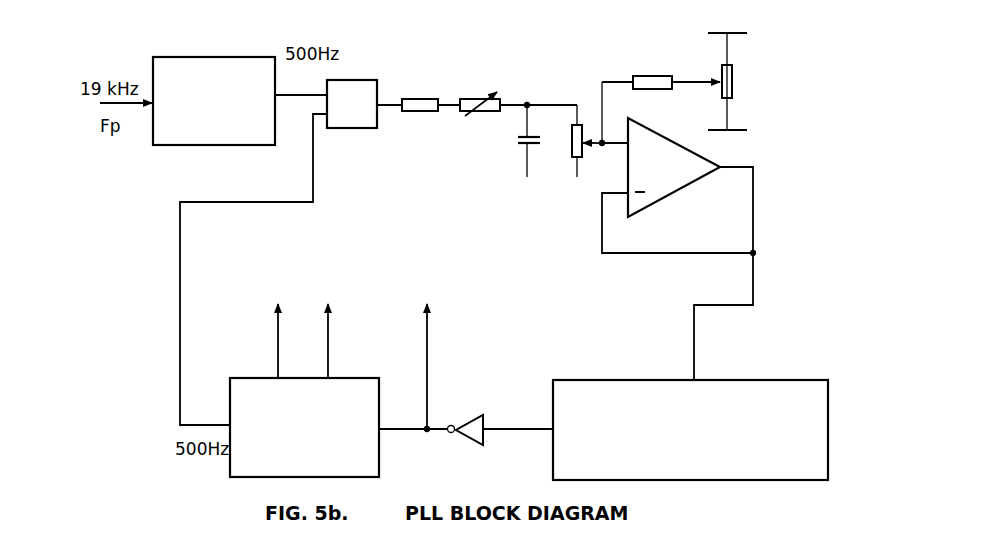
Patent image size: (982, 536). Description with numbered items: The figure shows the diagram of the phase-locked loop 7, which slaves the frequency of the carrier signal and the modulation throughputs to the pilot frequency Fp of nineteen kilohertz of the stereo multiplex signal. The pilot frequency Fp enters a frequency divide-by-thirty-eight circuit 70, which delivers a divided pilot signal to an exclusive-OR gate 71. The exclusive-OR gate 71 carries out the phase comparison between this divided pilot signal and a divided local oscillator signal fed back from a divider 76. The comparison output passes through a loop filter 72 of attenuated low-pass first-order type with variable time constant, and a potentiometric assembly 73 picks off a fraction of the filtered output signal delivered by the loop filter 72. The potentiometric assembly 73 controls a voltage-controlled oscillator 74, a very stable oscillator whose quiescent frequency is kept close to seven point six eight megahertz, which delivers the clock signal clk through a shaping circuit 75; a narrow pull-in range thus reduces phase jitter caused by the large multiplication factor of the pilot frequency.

The phase-locked loop 7 is at (170, 318).
The frequency divide-by-38 circuit 70 is at (212, 57).
The exclusive-OR gate 71 is at (360, 80).
The loop filter 72 is at (591, 74).
The potentiometric assembly 73 is at (680, 184).
The voltage-controlled oscillator 74 is at (778, 380).
The shaping circuit 75 is at (470, 415).
The FPGA divider 76 is at (364, 378).